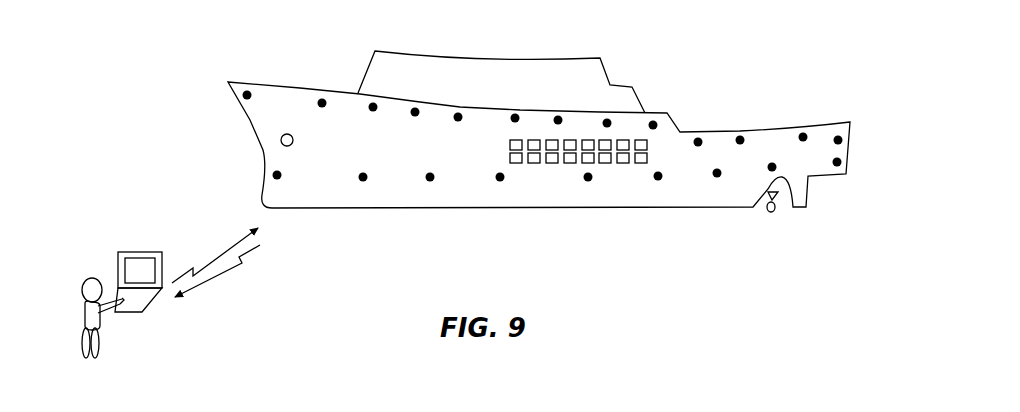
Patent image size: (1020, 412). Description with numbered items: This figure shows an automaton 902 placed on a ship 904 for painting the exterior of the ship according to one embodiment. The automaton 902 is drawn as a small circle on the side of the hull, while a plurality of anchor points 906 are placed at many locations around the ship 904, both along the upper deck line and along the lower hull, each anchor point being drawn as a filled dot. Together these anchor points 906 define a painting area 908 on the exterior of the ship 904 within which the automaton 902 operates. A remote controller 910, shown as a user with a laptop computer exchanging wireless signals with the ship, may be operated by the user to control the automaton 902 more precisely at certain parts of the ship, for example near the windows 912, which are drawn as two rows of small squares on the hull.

The automaton 902 is at (281, 141).
The ship 904 is at (539, 122).
The anchor points 906 is at (322, 103).
The painting area 908 is at (357, 125).
The remote controller 910 is at (172, 316).
The windows 912 is at (505, 146).